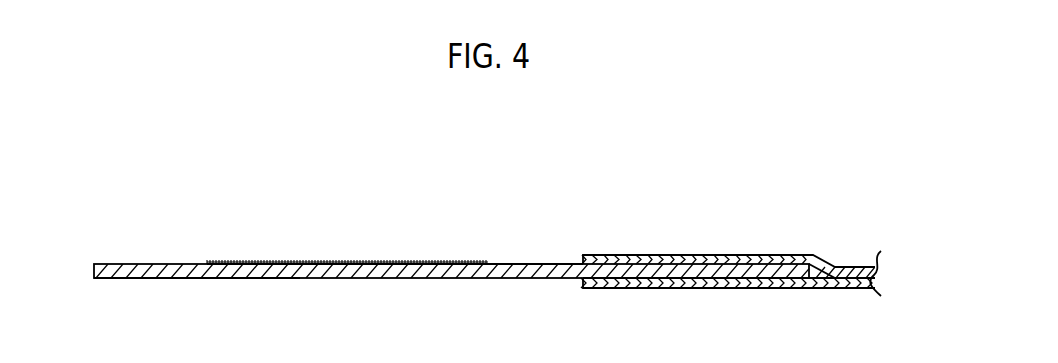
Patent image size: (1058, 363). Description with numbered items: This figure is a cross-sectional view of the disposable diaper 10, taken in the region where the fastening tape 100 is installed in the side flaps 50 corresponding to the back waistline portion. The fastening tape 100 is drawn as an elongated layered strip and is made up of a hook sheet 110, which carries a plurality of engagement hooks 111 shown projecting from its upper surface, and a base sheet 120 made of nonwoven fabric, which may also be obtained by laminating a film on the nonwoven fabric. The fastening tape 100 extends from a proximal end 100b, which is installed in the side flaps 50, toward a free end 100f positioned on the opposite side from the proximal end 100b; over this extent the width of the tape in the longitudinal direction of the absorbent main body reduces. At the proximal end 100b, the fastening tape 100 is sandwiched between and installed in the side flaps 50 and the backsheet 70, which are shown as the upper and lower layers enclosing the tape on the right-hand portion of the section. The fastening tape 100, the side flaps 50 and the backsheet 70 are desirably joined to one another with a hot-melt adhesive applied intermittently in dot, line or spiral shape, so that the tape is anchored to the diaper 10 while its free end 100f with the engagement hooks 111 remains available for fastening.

The disposable diaper 10 is at (766, 170).
The side flaps 50 is at (707, 255).
The backsheet 70 is at (745, 291).
The fastening tape 100 is at (153, 248).
The free end 100f is at (146, 278).
The proximal end 100b is at (678, 282).
The hook sheet 110 is at (421, 259).
The engagement hooks 111 is at (235, 260).
The base sheet 120 is at (532, 263).